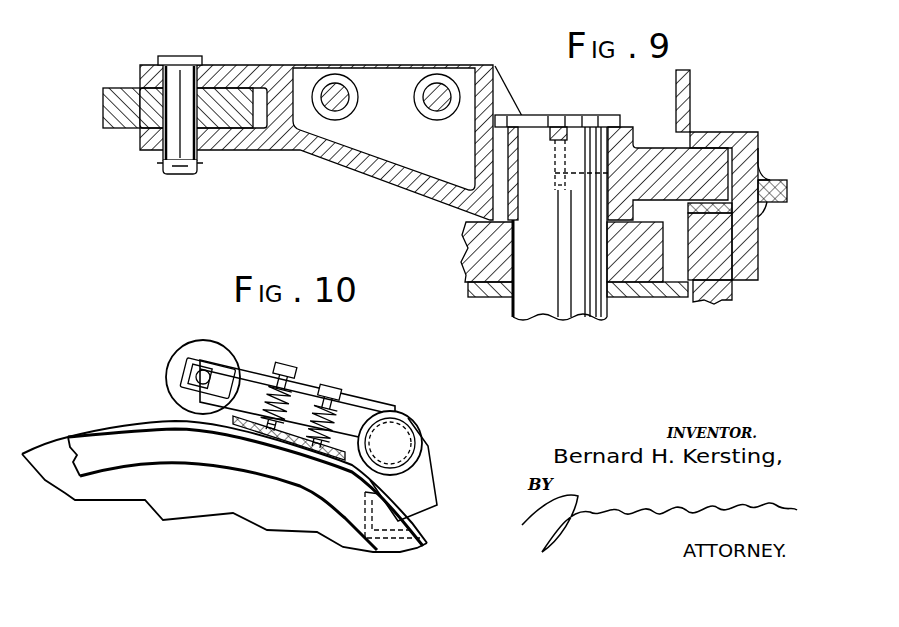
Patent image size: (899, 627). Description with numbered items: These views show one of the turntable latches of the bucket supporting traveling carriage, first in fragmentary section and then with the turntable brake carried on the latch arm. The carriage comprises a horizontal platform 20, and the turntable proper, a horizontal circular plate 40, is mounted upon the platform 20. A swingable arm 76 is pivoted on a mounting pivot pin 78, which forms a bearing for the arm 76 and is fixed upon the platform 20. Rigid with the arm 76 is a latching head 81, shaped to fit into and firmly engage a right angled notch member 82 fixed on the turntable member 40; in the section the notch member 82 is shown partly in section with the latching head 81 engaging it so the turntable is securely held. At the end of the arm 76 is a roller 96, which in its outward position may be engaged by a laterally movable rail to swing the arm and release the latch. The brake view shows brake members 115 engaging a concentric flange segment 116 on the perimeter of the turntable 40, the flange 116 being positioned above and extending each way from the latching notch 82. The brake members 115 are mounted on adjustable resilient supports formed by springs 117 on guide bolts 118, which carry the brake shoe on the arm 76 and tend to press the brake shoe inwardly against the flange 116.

In FIG. 9, the horizontal platform 20 is at (480, 295).
In FIG. 9, the horizontal circular plate 40 is at (777, 183).
In FIG. 10, the horizontal circular plate 40 is at (157, 495).
In FIG. 9, the swingable arm 76 is at (383, 180).
In FIG. 10, the swingable arm 76 is at (307, 386).
In FIG. 9, the mounting pivot pin 78 is at (537, 137).
In FIG. 10, the mounting pivot pin 78 is at (407, 435).
In FIG. 9, the latching head 81 is at (675, 167).
In FIG. 10, the latching head 81 is at (427, 477).
In FIG. 9, the right angled notch member 82 is at (697, 140).
In FIG. 10, the right angled notch member 82 is at (407, 520).
In FIG. 9, the roller 96 is at (103, 108).
In FIG. 10, the brake member 115 is at (292, 430).
In FIG. 9, the concentric flange segment 116 is at (690, 90).
In FIG. 10, the concentric flange segment 116 is at (125, 425).
In FIG. 10, the spring 117 is at (347, 410).
In FIG. 10, the guide bolt 118 is at (287, 360).